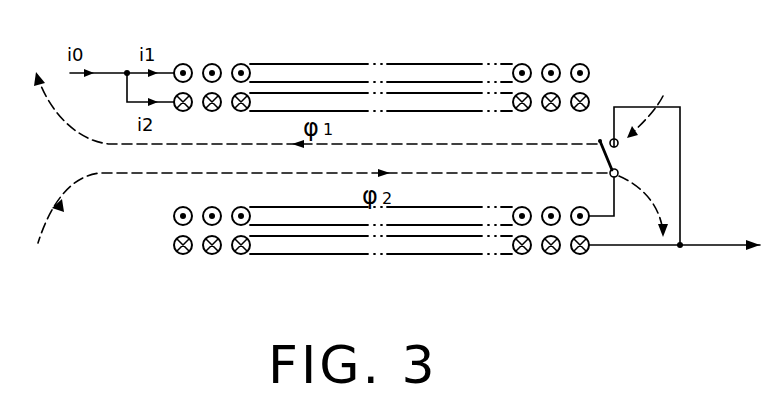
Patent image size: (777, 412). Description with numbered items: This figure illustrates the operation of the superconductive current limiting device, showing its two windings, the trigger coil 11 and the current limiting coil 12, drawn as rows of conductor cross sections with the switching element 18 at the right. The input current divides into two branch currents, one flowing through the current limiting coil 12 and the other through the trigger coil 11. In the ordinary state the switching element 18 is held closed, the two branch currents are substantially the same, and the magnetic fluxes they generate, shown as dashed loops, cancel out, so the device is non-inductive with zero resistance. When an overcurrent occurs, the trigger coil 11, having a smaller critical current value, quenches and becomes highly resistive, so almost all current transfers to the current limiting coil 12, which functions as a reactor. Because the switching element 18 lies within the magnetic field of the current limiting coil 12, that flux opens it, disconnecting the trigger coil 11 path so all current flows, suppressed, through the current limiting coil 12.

The trigger coil 11 is at (175, 212).
The current limiting coil 12 is at (174, 246).
The switching element 18 is at (612, 154).